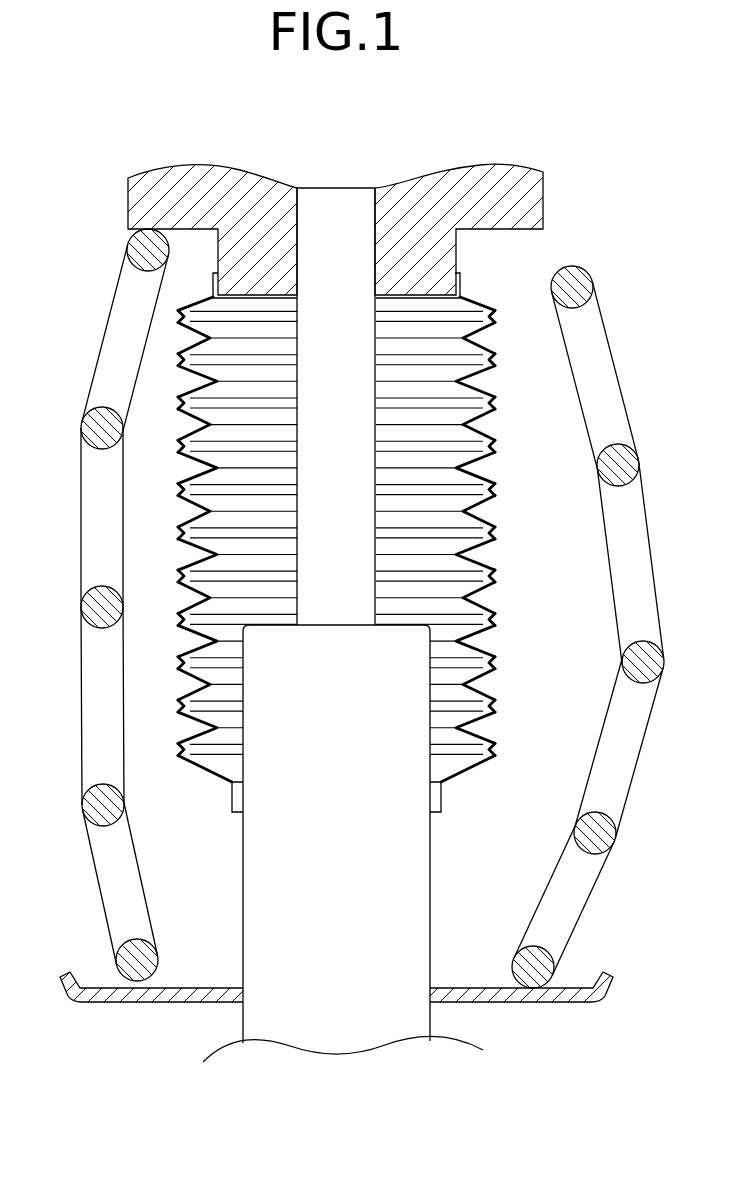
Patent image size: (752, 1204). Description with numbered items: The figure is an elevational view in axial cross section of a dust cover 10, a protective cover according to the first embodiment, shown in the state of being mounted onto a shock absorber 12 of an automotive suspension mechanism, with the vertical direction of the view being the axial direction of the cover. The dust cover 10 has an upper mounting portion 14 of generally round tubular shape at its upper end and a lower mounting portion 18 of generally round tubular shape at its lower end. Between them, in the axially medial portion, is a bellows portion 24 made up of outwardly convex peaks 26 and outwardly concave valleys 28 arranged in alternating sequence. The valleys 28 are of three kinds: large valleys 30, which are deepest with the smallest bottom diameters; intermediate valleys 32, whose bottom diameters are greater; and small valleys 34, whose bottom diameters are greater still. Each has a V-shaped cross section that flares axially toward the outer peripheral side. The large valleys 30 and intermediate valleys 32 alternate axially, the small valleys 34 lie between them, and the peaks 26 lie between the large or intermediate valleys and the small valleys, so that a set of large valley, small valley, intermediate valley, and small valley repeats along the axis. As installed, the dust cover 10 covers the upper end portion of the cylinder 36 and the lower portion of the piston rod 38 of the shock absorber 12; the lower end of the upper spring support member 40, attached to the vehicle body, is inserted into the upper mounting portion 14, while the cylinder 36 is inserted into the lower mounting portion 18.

The dust cover 10 is at (304, 473).
The shock absorber 12 is at (350, 843).
The upper mounting portion 14 is at (212, 287).
The lower mounting portion 18 is at (233, 797).
The bellows portion 24 is at (508, 483).
The peaks 26 is at (499, 442).
The valleys 28 is at (466, 380).
The large valleys 30 is at (214, 381).
The intermediate valleys 32 is at (188, 328).
The small valleys 34 is at (183, 315).
The cylinder 36 is at (262, 914).
The piston rod 38 is at (312, 222).
The upper spring support member 40 is at (548, 197).